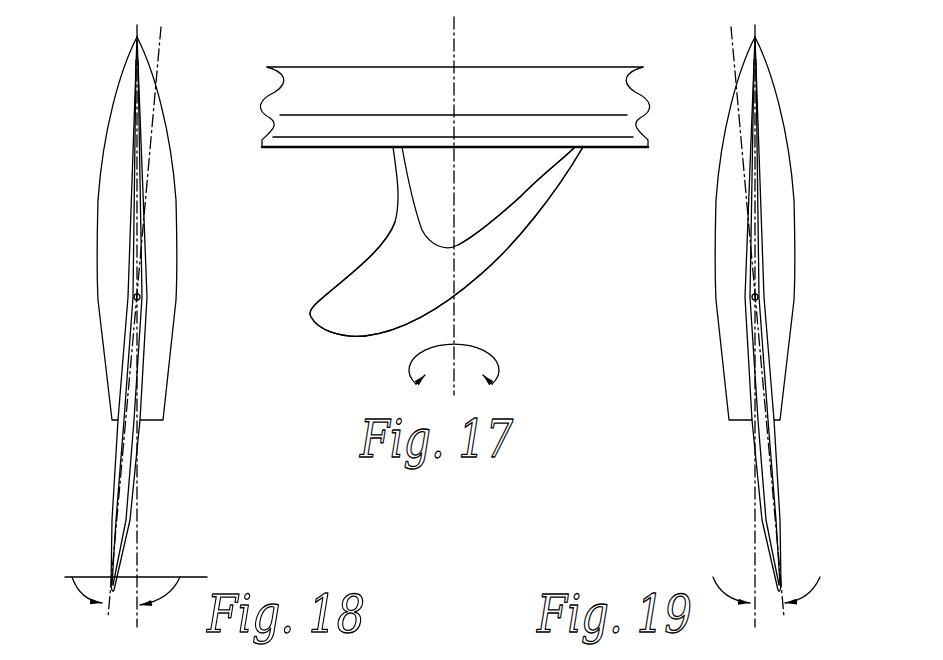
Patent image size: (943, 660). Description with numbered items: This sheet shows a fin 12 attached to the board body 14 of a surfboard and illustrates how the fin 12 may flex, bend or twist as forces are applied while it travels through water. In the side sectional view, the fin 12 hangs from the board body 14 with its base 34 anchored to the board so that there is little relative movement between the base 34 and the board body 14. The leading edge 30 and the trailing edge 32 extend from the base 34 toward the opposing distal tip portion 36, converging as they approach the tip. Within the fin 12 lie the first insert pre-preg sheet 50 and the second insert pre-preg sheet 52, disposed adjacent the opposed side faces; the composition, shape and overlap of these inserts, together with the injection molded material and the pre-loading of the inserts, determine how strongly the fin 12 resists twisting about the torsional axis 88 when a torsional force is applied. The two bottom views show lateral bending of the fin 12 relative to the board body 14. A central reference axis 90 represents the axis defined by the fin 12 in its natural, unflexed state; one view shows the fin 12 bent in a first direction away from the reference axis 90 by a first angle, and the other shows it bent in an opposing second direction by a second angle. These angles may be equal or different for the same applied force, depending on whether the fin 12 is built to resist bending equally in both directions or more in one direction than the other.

In FIG. 17, the fin 12 is at (500, 276).
In FIG. 18, the fin 12 is at (108, 518).
In FIG. 19, the fin 12 is at (781, 518).
In FIG. 17, the board body 14 is at (308, 62).
In FIG. 18, the board body 14 is at (108, 78).
In FIG. 19, the board body 14 is at (777, 78).
In FIG. 17, the leading edge 30 is at (527, 237).
In FIG. 17, the trailing edge 32 is at (390, 237).
In FIG. 17, the base 34 is at (517, 162).
In FIG. 17, the distal tip portion 36 is at (311, 316).
In FIG. 17, the first insert pre-preg sheet 50 is at (503, 185).
In FIG. 17, the second insert pre-preg sheet 52 is at (395, 283).
In FIG. 17, the torsional axis 88 is at (452, 42).
In FIG. 18, the central reference axis 90 is at (139, 532).
In FIG. 19, the central reference axis 90 is at (753, 538).